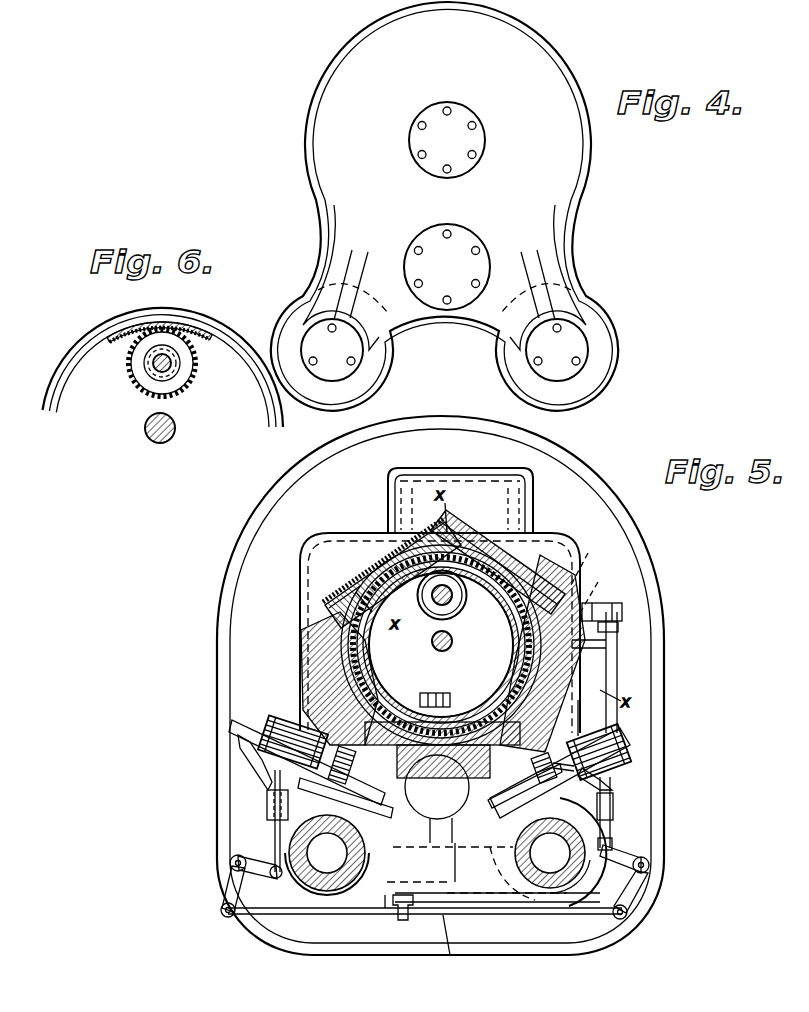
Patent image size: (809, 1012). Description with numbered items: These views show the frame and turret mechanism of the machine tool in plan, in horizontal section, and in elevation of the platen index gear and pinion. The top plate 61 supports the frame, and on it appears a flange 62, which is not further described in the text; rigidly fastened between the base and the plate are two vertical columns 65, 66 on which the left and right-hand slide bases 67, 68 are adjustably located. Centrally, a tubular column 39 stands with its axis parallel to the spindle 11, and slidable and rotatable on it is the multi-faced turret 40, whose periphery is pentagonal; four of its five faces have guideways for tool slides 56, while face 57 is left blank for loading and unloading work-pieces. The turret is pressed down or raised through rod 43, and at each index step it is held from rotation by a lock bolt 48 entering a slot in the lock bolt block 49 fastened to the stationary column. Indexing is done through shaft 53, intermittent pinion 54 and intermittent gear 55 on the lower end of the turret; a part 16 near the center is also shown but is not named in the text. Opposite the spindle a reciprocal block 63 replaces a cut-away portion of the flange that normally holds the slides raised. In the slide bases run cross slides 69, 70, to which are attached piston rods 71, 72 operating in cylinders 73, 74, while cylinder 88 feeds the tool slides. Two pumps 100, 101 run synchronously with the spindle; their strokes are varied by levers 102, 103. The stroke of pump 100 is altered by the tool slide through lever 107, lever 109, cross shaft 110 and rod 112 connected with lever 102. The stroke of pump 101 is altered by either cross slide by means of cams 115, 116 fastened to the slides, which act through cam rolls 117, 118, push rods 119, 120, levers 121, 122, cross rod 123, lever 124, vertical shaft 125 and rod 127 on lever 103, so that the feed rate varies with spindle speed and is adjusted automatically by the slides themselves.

In FIG. 4, the top plate 61 is at (586, 170).
In FIG. 4, the upper bearing flange 62 is at (476, 117).
In FIG. 4, the cylinder 88 is at (479, 258).
In FIG. 4, the vertical column 65 is at (300, 302).
In FIG. 5, the vertical column 65 is at (333, 874).
In FIG. 4, the vertical column 66 is at (596, 302).
In FIG. 5, the vertical column 66 is at (560, 906).
In FIG. 6, the turret 40 is at (230, 334).
In FIG. 5, the turret 40 is at (323, 602).
In FIG. 6, the intermittent gear 55 is at (188, 328).
In FIG. 5, the intermittent gear 55 is at (383, 560).
In FIG. 6, the intermittent pinion 54 is at (138, 386).
In FIG. 5, the intermittent pinion 54 is at (398, 600).
In FIG. 6, the shaft 53 is at (170, 370).
In FIG. 5, the shaft 53 is at (441, 645).
In FIG. 6, the rod 43 is at (147, 442).
In FIG. 5, the rod 43 is at (433, 648).
In FIG. 5, the face 57 is at (362, 590).
In FIG. 5, the tubular column 39 is at (356, 592).
In FIG. 5, the tool slide 56 is at (301, 635).
In FIG. 5, the spindle 16 is at (451, 641).
In FIG. 5, the lock bolt 48 is at (421, 694).
In FIG. 5, the lock bolt block 49 is at (445, 693).
In FIG. 5, the slide base 67 is at (450, 818).
In FIG. 5, the spindle 11 is at (456, 843).
In FIG. 5, the slide base 68 is at (550, 853).
In FIG. 5, the cylinder 73 is at (240, 718).
In FIG. 5, the piston rod 71 is at (262, 722).
In FIG. 5, the cross slide 69 is at (300, 728).
In FIG. 5, the cam 115 is at (236, 730).
In FIG. 5, the cam roll 117 is at (268, 784).
In FIG. 5, the push rod 119 is at (275, 834).
In FIG. 5, the lever 121 is at (237, 883).
In FIG. 5, the lever 122 is at (620, 845).
In FIG. 5, the lever 124 is at (627, 897).
In FIG. 5, the vertical shaft 125 is at (649, 864).
In FIG. 5, the push rod 120 is at (617, 826).
In FIG. 5, the piston rod 72 is at (613, 802).
In FIG. 5, the cam 116 is at (622, 724).
In FIG. 5, the cylinder 74 is at (630, 738).
In FIG. 5, the cam roll 118 is at (628, 748).
In FIG. 5, the reciprocal block 63 is at (522, 733).
In FIG. 5, the cross slide 70 is at (536, 760).
In FIG. 5, the rod 112 is at (617, 688).
In FIG. 5, the lever 103 is at (618, 610).
In FIG. 5, the rod 127 is at (620, 628).
In FIG. 5, the lever 102 is at (622, 648).
In FIG. 5, the pump 101 is at (596, 561).
In FIG. 5, the pump 100 is at (607, 590).
In FIG. 5, the lever 109 is at (397, 921).
In FIG. 5, the lever 107 is at (386, 906).
In FIG. 5, the cross shaft 110 is at (487, 903).
In FIG. 5, the cross rod 123 is at (450, 955).